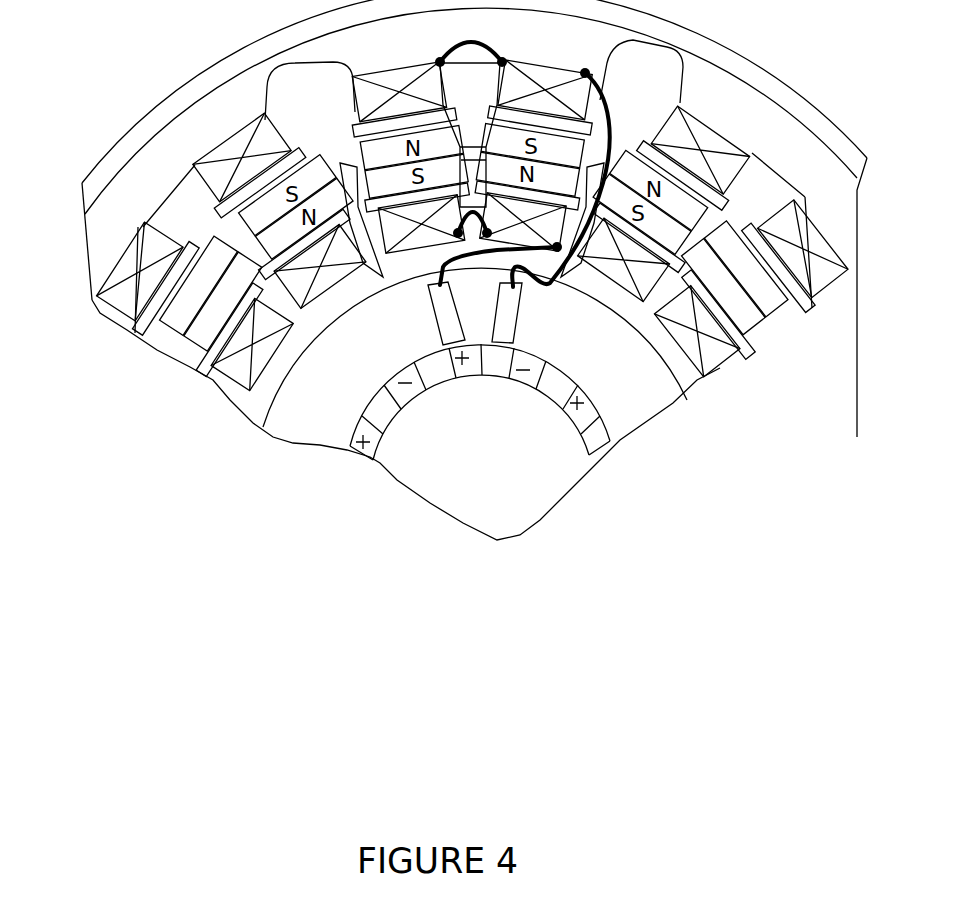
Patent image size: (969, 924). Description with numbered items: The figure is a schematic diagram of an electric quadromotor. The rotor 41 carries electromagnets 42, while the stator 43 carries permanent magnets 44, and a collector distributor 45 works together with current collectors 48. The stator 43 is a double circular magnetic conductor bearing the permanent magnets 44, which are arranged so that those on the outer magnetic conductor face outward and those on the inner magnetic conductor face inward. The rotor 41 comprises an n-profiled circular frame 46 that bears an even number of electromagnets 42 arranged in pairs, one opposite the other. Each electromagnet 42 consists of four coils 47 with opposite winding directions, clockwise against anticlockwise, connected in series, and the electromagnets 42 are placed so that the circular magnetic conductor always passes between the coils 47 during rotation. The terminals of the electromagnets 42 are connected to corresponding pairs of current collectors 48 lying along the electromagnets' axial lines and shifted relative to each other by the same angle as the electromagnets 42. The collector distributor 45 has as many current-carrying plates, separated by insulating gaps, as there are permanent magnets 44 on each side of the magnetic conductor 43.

The rotor 41 is at (126, 125).
The electromagnets 42 is at (143, 320).
The stator 43 is at (175, 350).
The permanent magnets 44 is at (755, 315).
The collector distributor 45 is at (372, 447).
The n-profiled circular frame 46 is at (840, 210).
The coils 47 is at (240, 362).
The current collectors 48 is at (510, 312).